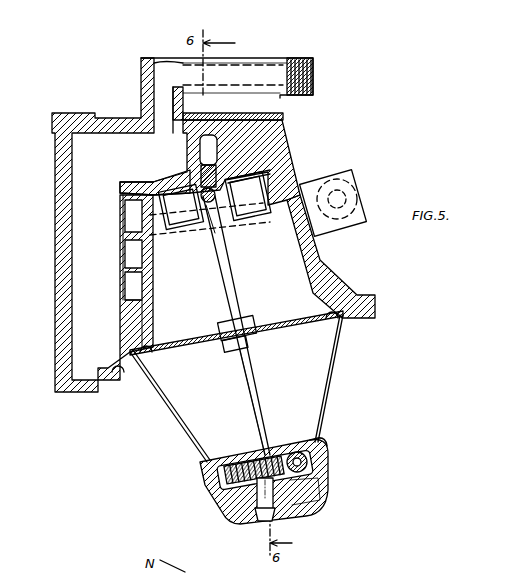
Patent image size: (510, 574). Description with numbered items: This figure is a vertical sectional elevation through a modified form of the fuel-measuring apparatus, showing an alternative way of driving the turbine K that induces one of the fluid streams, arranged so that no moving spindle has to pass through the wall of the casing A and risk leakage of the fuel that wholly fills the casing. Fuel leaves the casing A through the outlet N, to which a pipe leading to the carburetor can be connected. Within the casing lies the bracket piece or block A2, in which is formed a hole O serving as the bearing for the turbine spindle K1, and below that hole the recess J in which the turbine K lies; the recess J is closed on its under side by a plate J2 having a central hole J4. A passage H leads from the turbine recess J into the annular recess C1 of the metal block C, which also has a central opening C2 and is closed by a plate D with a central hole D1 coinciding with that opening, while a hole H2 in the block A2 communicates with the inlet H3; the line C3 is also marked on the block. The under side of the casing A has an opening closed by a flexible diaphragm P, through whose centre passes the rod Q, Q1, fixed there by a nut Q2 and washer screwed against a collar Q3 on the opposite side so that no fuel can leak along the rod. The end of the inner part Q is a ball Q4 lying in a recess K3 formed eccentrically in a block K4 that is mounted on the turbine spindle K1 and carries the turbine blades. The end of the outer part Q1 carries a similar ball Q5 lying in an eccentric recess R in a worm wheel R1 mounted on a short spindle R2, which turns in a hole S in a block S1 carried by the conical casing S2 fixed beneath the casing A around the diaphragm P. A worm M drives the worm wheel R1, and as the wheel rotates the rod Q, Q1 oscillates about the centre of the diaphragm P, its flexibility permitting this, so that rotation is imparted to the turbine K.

The casing A is at (115, 120).
The bracket piece or block A2 is at (263, 157).
The outlet N is at (172, 78).
The hole O is at (277, 117).
The turbine K is at (265, 170).
The turbine spindle K1 is at (208, 150).
The recess K3 is at (199, 212).
The block K4 is at (341, 223).
The passage H is at (147, 195).
The hole H2 is at (165, 238).
The inlet H3 is at (338, 198).
The recess J is at (258, 176).
The plate J2 is at (238, 215).
The central hole J4 is at (244, 228).
The metal piece or block C is at (140, 313).
The annular recess C1 is at (130, 287).
The central opening C2 is at (130, 270).
The cylinder liner C3 is at (128, 213).
The plate D is at (127, 232).
The central hole D1 is at (128, 253).
The inner part of rod Q is at (228, 282).
The outer part of rod Q1 is at (250, 388).
The nut Q2 is at (227, 340).
The collar Q3 is at (248, 320).
The ball Q4 is at (217, 235).
The ball Q5 is at (313, 477).
The flexible diaphragm P is at (280, 318).
The hole S is at (263, 522).
The block S1 is at (313, 488).
The conical casing S2 is at (160, 408).
The worm M is at (320, 446).
The recess R is at (300, 515).
The worm wheel R1 is at (222, 467).
The short spindle R2 is at (260, 495).